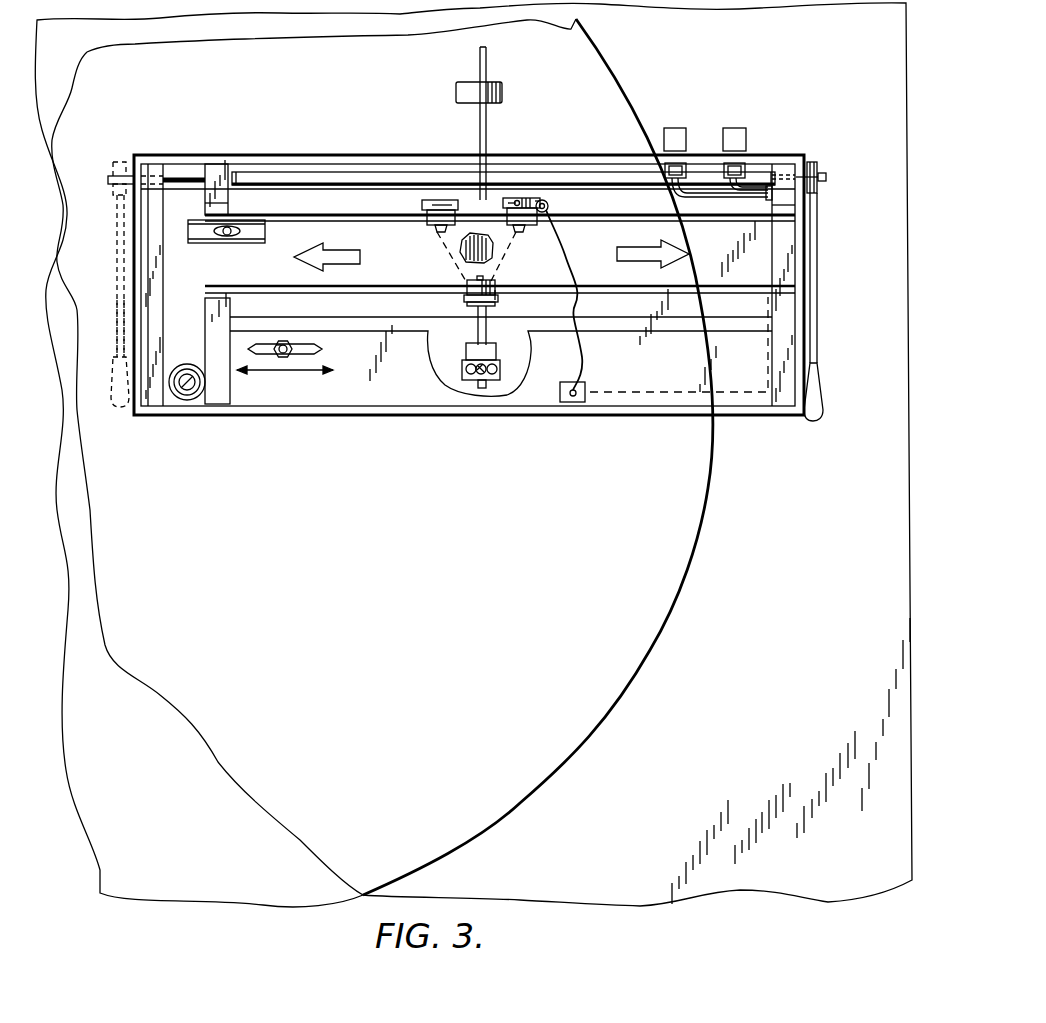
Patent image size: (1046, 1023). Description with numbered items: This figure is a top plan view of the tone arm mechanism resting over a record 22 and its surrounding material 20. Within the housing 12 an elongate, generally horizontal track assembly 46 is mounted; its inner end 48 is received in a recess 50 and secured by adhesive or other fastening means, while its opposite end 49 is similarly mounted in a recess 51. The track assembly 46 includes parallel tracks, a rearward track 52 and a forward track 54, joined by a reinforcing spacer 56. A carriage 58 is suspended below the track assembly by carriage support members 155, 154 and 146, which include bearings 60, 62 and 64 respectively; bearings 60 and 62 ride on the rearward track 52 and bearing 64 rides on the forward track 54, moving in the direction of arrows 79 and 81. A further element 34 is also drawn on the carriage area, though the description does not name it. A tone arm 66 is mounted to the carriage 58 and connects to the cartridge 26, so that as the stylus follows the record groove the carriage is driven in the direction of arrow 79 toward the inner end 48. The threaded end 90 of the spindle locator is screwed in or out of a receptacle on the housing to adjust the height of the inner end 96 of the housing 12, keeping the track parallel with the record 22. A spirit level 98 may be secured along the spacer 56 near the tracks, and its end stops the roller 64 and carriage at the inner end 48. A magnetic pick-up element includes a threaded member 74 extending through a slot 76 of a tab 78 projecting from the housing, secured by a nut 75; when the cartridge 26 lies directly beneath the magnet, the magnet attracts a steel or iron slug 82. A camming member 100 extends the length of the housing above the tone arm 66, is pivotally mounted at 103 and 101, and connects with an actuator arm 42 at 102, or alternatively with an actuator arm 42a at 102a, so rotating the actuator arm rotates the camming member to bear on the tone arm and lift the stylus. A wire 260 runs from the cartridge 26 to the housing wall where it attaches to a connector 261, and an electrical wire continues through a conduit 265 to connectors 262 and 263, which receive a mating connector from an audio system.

The housing 12 is at (352, 418).
The sheet material 20 is at (785, 740).
The record 22 is at (458, 616).
The cartridge 26 is at (470, 345).
The carriage 34 is at (516, 198).
The actuator arm 42 is at (821, 312).
The actuator arm 42a is at (126, 352).
The track assembly 46 is at (425, 277).
The inner end of track 48 is at (164, 268).
The end of track 49 is at (795, 252).
The recess 50 is at (215, 209).
The recess 51 is at (786, 210).
The rearward track 52 is at (659, 214).
The forward track 54 is at (725, 287).
The reinforcing spacer 56 is at (715, 268).
The carriage 58 is at (488, 257).
The bearing 60 is at (428, 216).
The bearing 62 is at (528, 236).
The bearing 64 is at (467, 290).
The tone arm 66 is at (480, 72).
The threaded member 74 is at (288, 342).
The nut 75 is at (283, 340).
The slot 76 is at (323, 349).
The tab 78 is at (298, 398).
The arrow 79 is at (322, 241).
The arrow 81 is at (631, 250).
The slug 82 is at (472, 385).
The threaded end 90 is at (185, 398).
The inner end of housing 96 is at (152, 228).
The spirit level 98 is at (253, 243).
The camming member 100 is at (331, 175).
The pivot mount 101 is at (828, 178).
The connection 102 is at (818, 165).
The connection 102a is at (134, 160).
The pivot mount 103 is at (184, 178).
The carriage support member 146 is at (493, 300).
The carriage support member 154 is at (528, 200).
The carriage support member 155 is at (437, 198).
The wire 260 is at (582, 306).
The connector 261 is at (573, 402).
The connector 262 is at (675, 127).
The connector 263 is at (740, 127).
The conduit 265 is at (748, 396).